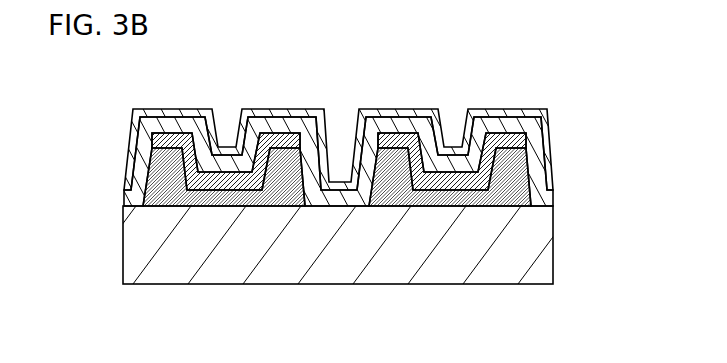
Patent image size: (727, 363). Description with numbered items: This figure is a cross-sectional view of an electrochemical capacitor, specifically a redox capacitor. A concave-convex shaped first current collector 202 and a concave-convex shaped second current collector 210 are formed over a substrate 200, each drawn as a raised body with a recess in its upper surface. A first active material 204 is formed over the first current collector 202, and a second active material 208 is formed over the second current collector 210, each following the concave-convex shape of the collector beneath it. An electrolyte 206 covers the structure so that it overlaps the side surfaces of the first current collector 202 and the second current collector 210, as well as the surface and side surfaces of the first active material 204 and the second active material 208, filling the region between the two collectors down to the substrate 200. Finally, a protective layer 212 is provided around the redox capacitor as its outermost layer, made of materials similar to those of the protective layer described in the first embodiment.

The substrate 200 is at (300, 232).
The first current collector 202 is at (163, 163).
The first active material 204 is at (215, 175).
The electrolyte 206 is at (330, 190).
The second active material 208 is at (445, 177).
The second current collector 210 is at (390, 190).
The protective layer 212 is at (548, 150).